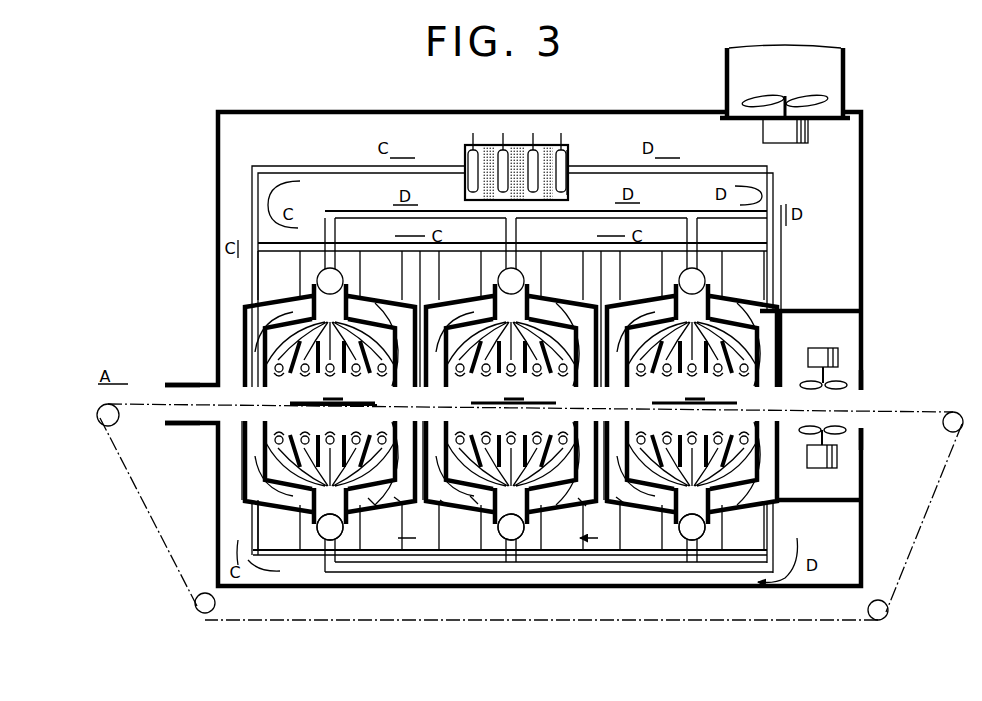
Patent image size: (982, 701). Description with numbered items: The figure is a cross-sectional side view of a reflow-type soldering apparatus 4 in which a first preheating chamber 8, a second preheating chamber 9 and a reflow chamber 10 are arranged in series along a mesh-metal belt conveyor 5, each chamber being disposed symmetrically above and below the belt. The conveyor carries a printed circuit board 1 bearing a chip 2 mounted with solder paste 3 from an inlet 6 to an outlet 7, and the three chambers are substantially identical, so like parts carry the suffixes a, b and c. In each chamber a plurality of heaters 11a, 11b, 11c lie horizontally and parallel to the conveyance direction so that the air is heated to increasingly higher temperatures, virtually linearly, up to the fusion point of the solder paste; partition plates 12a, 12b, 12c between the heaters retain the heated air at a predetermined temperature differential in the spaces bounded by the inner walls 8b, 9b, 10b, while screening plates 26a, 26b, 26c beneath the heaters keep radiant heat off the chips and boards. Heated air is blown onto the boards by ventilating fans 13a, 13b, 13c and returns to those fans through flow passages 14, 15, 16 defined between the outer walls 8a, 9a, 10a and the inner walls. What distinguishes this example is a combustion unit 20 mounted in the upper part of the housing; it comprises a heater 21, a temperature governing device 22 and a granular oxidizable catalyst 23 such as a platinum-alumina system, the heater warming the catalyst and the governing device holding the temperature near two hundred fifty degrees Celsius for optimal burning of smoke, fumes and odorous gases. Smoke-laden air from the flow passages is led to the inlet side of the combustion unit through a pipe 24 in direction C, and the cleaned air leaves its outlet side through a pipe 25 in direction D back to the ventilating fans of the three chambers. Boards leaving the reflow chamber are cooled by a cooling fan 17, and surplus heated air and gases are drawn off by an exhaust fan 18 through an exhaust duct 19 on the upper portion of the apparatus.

The printed circuit board 1 is at (318, 405).
The chip 2 is at (330, 399).
The solder paste 3 is at (340, 399).
The soldering apparatus 4 is at (590, 108).
The belt conveyor 5 is at (895, 409).
The inlet 6 is at (173, 393).
The outlet 7 is at (862, 396).
The first preheating chamber 8 is at (381, 304).
The second preheating chamber 9 is at (556, 304).
The reflow chamber 10 is at (733, 302).
The outer wall 8a is at (373, 504).
The inner wall 8b is at (399, 502).
The outer wall 9a is at (445, 502).
The inner wall 9b is at (474, 504).
The outer wall 10a is at (583, 505).
The inner wall 10b is at (622, 502).
The heaters 11a is at (306, 352).
The heaters 11b is at (487, 352).
The heaters 11c is at (668, 352).
The partition plate 12a is at (305, 458).
The partition plate 12b is at (486, 458).
The partition plate 12c is at (667, 458).
The ventilating fan 13a is at (330, 530).
The ventilating fan 13b is at (511, 530).
The ventilating fan 13c is at (692, 530).
The flow passage 14 is at (257, 428).
The flow passage 15 is at (452, 434).
The flow passage 16 is at (630, 434).
The cooling fan 17 is at (828, 350).
The exhaust fan 18 is at (820, 100).
The exhaust duct 19 is at (848, 80).
The combustion unit 20 is at (484, 145).
The heater 21 is at (565, 178).
The temperature governing device 22 is at (570, 172).
The catalyst 23 is at (547, 160).
The pipe 24 is at (293, 175).
The pipe 25 is at (748, 172).
The screening plate 26a is at (378, 436).
The screening plate 26b is at (559, 436).
The screening plate 26c is at (740, 436).